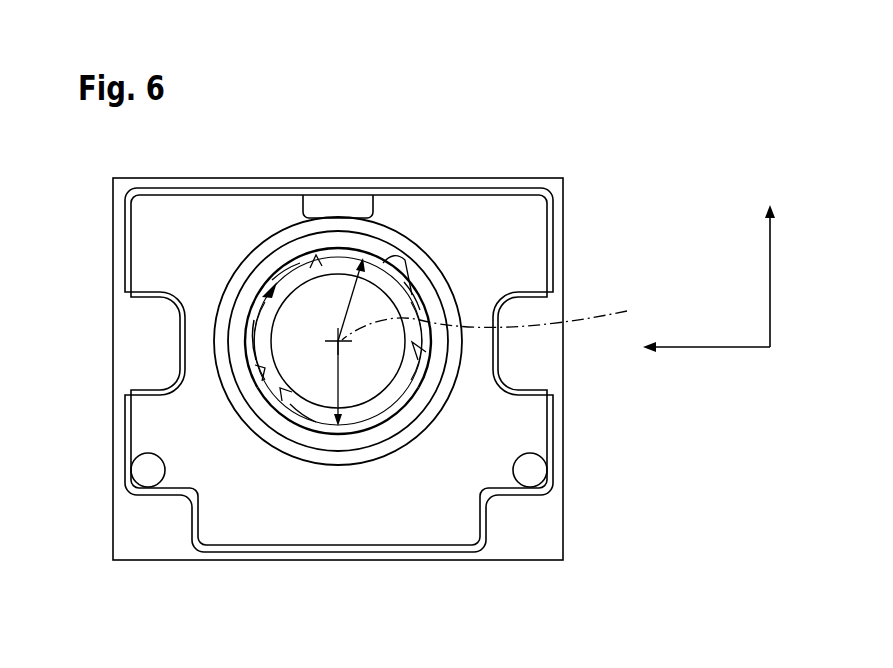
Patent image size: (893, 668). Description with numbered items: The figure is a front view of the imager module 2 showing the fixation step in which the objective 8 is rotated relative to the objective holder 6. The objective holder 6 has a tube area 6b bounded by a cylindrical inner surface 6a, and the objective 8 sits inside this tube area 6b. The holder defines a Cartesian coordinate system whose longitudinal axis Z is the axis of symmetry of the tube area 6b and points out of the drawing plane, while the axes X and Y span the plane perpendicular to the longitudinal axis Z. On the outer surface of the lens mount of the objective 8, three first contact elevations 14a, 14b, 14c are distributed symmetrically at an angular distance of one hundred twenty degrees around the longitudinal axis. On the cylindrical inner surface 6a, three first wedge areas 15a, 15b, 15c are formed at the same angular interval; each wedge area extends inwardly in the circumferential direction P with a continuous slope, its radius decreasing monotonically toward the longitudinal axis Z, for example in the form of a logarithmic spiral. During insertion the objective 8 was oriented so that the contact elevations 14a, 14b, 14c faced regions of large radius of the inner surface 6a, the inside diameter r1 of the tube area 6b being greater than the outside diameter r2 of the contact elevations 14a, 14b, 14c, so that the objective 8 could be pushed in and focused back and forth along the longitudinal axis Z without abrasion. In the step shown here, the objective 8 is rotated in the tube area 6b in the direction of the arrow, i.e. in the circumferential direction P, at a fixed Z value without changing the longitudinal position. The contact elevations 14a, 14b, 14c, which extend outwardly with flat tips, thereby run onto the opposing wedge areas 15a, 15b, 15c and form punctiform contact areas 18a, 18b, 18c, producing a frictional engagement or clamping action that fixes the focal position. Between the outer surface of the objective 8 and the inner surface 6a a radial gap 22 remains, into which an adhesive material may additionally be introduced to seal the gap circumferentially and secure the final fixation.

The imager module 2 is at (76, 147).
The objective holder 6 is at (114, 190).
The cylindrical inner surface 6a is at (380, 276).
The tube area 6b is at (392, 432).
The objective 8 is at (340, 418).
The first contact elevation 14a is at (268, 290).
The first contact elevation 14b is at (405, 272).
The first contact elevation 14c is at (318, 425).
The punctiform contact area 18a is at (280, 266).
The punctiform contact area 18b is at (418, 296).
The punctiform contact area 18c is at (305, 430).
The first wedge area 15a is at (315, 262).
The first wedge area 15b is at (420, 352).
The first wedge area 15c is at (283, 392).
The radial gap 22 is at (258, 373).
The circumferential direction P is at (256, 342).
The inside diameter of tube area r1 is at (344, 306).
The outside diameter of contact elevations r2 is at (323, 383).
The X axis X is at (768, 259).
The Y axis Y is at (705, 350).
The longitudinal axis Z is at (497, 310).